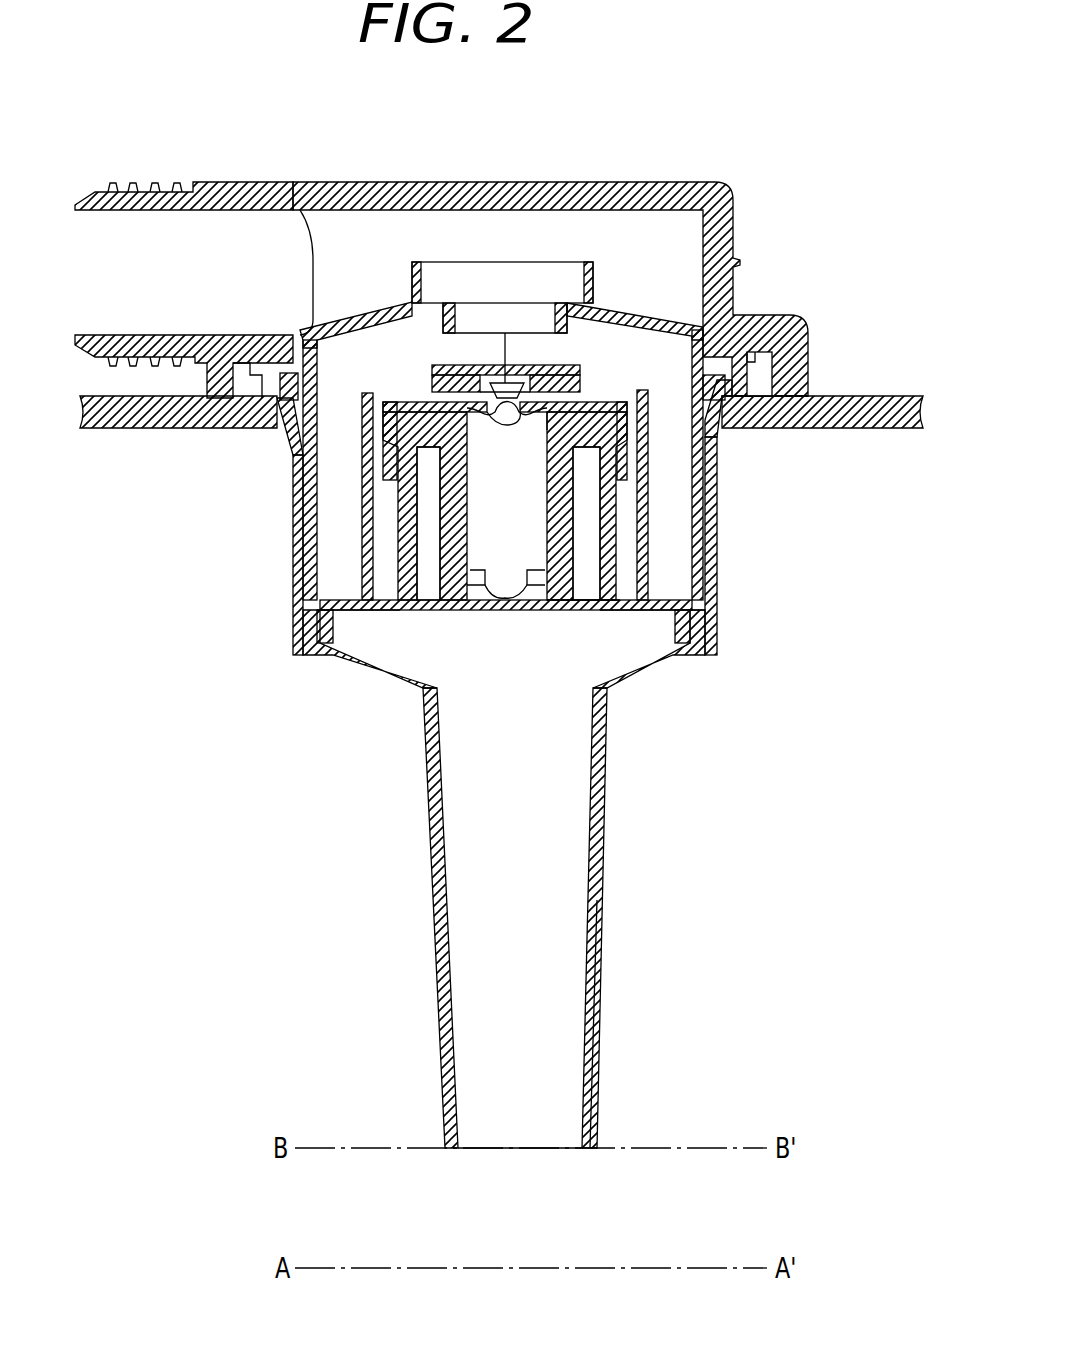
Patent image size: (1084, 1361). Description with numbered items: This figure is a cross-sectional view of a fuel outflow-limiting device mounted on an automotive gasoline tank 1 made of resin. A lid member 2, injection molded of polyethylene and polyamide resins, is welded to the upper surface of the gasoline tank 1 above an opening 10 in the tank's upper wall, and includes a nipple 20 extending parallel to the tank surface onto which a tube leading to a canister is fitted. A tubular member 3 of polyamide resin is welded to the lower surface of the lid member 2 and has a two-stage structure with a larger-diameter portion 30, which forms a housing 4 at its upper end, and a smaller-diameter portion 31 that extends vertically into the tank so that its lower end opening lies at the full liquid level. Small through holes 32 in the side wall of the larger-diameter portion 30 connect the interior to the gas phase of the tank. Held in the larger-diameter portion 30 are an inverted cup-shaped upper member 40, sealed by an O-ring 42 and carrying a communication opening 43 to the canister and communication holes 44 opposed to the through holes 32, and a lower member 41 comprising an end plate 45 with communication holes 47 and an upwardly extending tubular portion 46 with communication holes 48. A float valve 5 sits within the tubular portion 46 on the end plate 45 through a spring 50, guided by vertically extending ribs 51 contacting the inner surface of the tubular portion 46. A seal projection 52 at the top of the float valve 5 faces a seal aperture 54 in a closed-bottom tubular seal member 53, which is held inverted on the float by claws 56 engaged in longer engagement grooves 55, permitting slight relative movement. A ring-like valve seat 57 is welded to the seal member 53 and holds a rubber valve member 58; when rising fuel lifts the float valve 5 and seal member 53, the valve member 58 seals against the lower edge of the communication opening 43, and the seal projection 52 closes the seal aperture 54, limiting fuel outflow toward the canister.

The gasoline tank 1 is at (878, 396).
The lid member 2 is at (683, 182).
The tubular member 3 is at (614, 868).
The housing 4 is at (706, 302).
The float valve 5 is at (520, 600).
The opening 10 is at (756, 404).
The nipple 20 is at (105, 187).
The larger-diameter portion 30 is at (717, 582).
The smaller-diameter portion 31 is at (596, 1012).
The through holes 32 is at (730, 413).
The upper member 40 is at (440, 372).
The lower member 41 is at (358, 548).
The O-ring 42 is at (285, 405).
The communication opening 43 is at (503, 278).
The communication holes 44 is at (725, 452).
The end plate 45 is at (623, 610).
The tubular portion 46 is at (648, 543).
The communication holes 47 is at (577, 610).
The communication holes 48 is at (712, 610).
The spring 50 is at (453, 610).
The ribs 51 is at (627, 513).
The seal projection 52 is at (590, 405).
The seal member 53 is at (343, 324).
The seal aperture 54 is at (505, 400).
The engagement grooves 55 is at (380, 607).
The claws 56 is at (383, 468).
The valve seat 57 is at (432, 382).
The valve member 58 is at (478, 383).